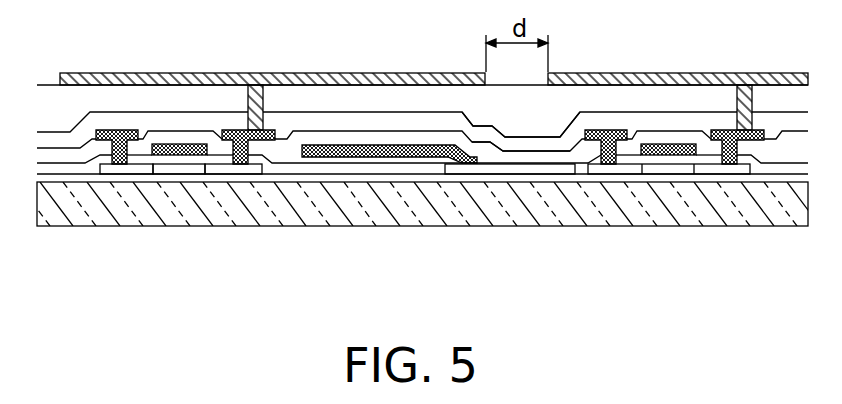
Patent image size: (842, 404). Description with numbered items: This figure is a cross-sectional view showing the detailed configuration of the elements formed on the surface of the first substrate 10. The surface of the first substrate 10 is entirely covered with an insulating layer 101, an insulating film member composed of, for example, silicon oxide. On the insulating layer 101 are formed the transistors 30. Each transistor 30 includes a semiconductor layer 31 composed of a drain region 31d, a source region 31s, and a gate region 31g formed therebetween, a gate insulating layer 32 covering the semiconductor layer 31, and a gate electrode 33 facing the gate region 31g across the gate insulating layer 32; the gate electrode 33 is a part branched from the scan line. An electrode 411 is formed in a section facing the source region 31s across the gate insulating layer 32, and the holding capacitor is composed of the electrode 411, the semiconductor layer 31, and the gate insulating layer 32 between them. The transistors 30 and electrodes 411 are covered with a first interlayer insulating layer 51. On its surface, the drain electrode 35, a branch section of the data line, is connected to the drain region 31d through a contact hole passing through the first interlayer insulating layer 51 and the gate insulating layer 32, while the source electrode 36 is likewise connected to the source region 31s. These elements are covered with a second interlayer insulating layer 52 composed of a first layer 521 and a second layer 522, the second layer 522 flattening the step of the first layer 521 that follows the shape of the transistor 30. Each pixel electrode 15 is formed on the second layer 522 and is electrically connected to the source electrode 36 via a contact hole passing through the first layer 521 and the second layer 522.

The first substrate 10 is at (733, 227).
The insulating layer 101 is at (318, 176).
The pixel electrode 15 is at (378, 73).
The transistor 30 is at (163, 123).
The semiconductor layer 31 is at (425, 240).
The drain region 31d is at (127, 168).
The gate region 31g is at (181, 168).
The source region 31s is at (233, 222).
The gate insulating layer 32 is at (283, 158).
The gate electrode 33 is at (183, 144).
The drain electrode 35 is at (104, 130).
The source electrode 36 is at (231, 130).
The electrode 411 is at (466, 163).
The first interlayer insulating layer 51 is at (503, 160).
The second interlayer insulating layer 52 is at (615, 298).
The first layer 521 is at (530, 152).
The second layer 522 is at (555, 113).